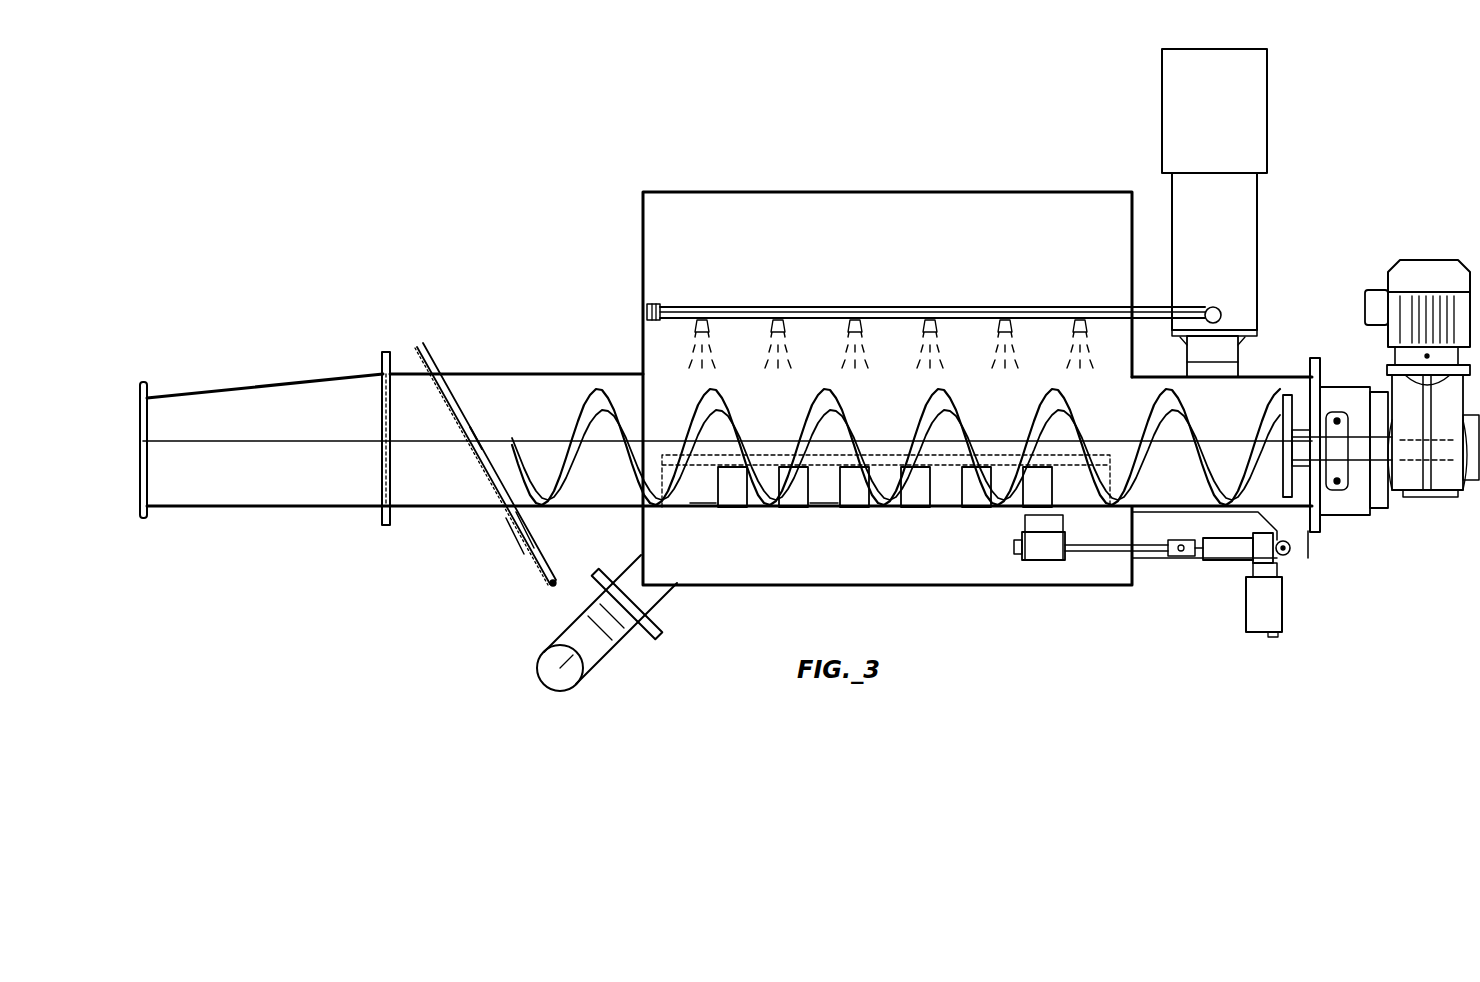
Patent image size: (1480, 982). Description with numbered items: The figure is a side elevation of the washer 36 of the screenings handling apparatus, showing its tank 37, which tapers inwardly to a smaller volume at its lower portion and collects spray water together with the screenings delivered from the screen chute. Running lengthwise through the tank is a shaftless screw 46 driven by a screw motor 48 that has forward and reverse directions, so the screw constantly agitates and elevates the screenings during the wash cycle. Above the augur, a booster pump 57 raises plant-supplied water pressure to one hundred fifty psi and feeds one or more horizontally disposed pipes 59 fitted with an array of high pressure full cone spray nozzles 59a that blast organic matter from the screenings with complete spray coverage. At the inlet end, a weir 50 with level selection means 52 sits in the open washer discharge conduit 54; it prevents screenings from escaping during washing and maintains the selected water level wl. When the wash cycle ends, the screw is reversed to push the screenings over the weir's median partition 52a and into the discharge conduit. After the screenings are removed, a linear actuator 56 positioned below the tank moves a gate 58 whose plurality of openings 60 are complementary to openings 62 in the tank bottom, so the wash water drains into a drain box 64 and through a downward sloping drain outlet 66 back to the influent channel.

The washer 36 is at (686, 131).
The tank 37 is at (660, 228).
The shaftless screw 46 is at (848, 407).
The screw motor 48 is at (1350, 518).
The weir 50 is at (447, 373).
The level selection means 52 is at (548, 572).
The median partition 52a is at (480, 438).
The washer discharge conduit 54 is at (437, 512).
The linear actuator 56 is at (1243, 597).
The booster pump 57 is at (1267, 103).
The gate 58 is at (1068, 520).
The horizontally disposed pipes 59 is at (1112, 306).
The high pressure full cone spray nozzles 59a is at (780, 322).
The openings 60 is at (702, 500).
The openings 62 is at (733, 500).
The drain box 64 is at (795, 590).
The drain outlet 66 is at (558, 648).
The water level wl is at (652, 370).